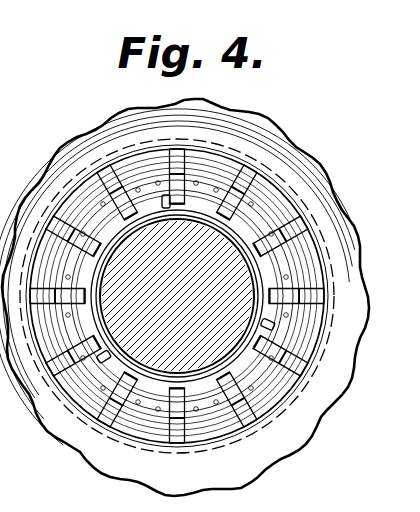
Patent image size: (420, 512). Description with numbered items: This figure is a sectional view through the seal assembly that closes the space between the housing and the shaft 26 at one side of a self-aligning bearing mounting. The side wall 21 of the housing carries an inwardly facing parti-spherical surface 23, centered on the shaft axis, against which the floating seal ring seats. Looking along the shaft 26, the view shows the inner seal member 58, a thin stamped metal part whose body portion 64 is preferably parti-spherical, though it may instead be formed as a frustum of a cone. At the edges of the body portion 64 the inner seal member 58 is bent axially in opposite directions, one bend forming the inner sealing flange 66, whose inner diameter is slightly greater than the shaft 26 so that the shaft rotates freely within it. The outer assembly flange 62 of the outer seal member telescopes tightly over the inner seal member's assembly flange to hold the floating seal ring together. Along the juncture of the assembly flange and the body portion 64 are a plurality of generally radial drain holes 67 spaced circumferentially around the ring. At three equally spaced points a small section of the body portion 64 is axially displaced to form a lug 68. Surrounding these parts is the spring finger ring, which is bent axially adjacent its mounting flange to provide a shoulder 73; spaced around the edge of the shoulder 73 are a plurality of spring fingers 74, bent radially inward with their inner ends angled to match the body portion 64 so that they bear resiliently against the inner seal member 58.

The side wall 21 is at (329, 406).
The parti-spherical surface 23 is at (299, 336).
The shaft 26 is at (219, 347).
The inner seal member 58 is at (200, 398).
The outer assembly flange 62 is at (257, 401).
The body portion 64 is at (150, 398).
The inner sealing flange 66 is at (203, 213).
The drain holes 67 is at (99, 348).
The lug 68 is at (164, 196).
The shoulder 73 is at (283, 197).
The spring fingers 74 is at (291, 238).